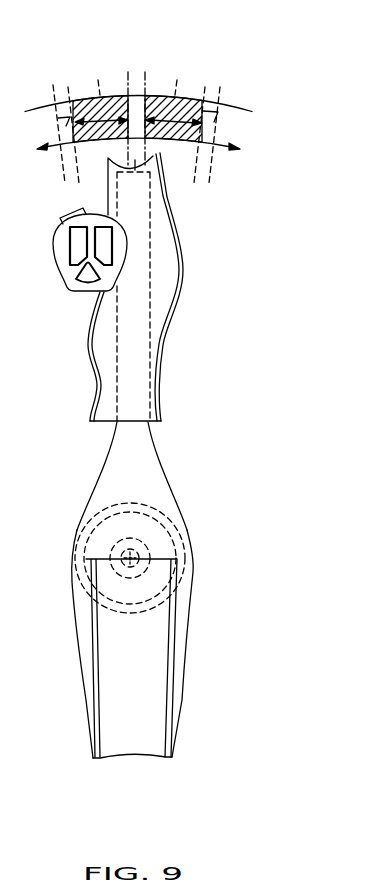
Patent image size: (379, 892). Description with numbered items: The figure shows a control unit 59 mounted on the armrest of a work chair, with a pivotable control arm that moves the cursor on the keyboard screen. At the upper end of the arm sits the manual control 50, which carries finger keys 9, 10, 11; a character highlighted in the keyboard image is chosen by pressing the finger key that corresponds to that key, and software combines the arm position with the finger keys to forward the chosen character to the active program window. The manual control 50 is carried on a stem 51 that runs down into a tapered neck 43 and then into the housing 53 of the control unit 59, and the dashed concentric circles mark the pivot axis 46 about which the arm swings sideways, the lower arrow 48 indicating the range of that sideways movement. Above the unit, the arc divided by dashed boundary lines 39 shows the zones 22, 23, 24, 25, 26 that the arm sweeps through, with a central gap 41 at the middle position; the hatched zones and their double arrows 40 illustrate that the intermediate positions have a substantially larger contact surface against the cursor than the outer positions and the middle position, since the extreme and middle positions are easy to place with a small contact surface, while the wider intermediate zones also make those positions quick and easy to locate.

The finger key 9 is at (71, 251).
The finger key 10 is at (100, 243).
The finger key 11 is at (87, 279).
The first zone 22 is at (53, 85).
The second zone 23 is at (98, 80).
The third zone 24 is at (145, 70).
The fourth zone 25 is at (177, 82).
The fifth zone 26 is at (220, 85).
The zone boundary 39 is at (211, 116).
The contact width 40 is at (165, 128).
The central gap 41 is at (147, 94).
The tapered neck 43 is at (120, 476).
The pivot axis 46 is at (127, 556).
The rotation range 48 is at (222, 151).
The manual control 50 is at (68, 278).
The stem 51 is at (100, 347).
The housing 53 is at (118, 673).
The control unit 59 is at (135, 766).